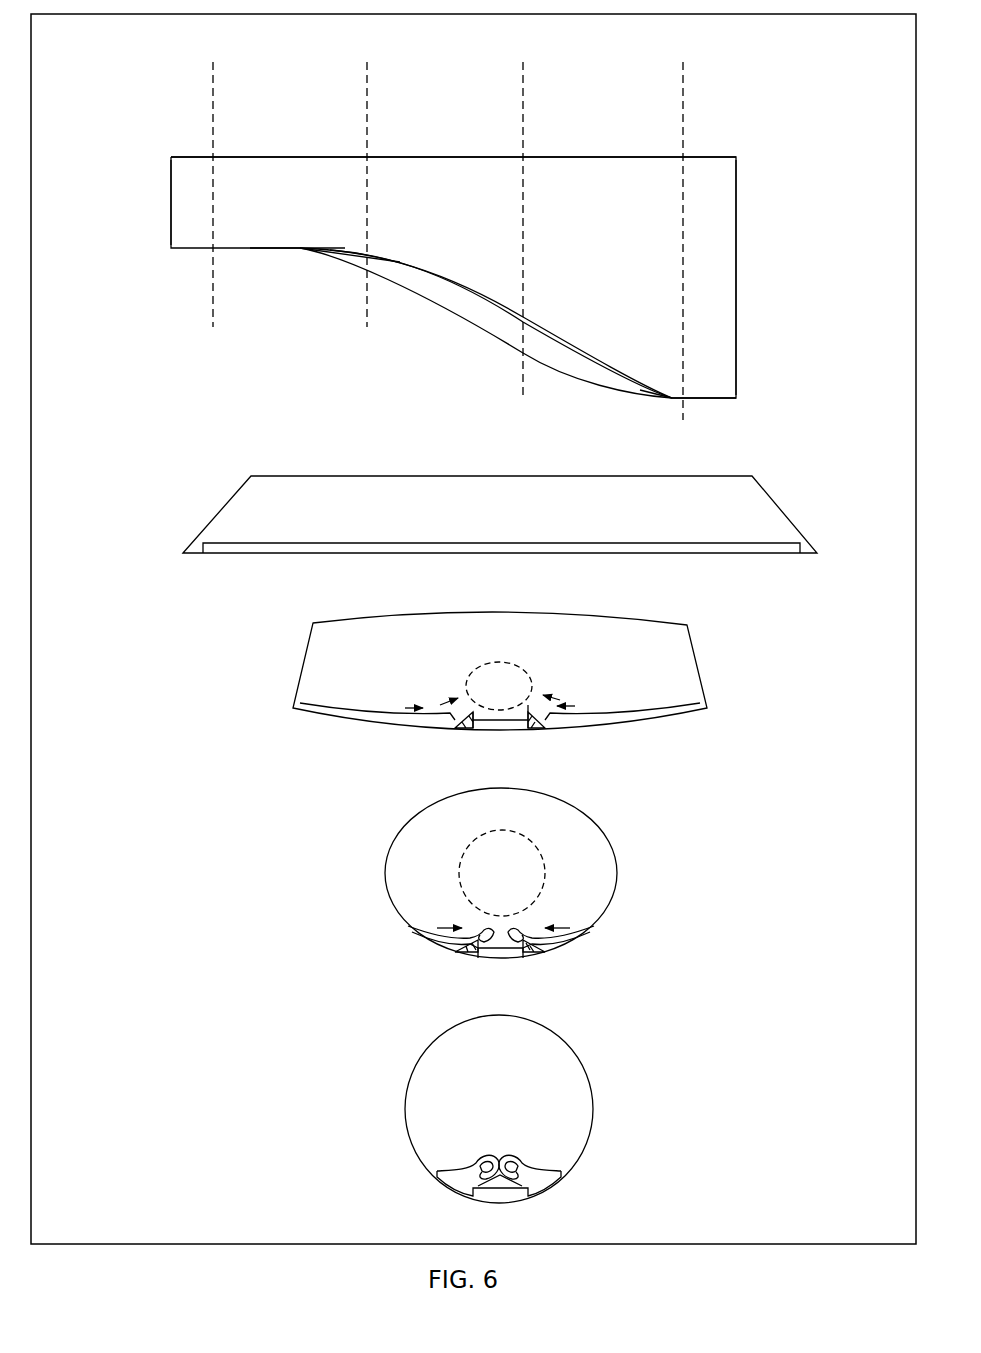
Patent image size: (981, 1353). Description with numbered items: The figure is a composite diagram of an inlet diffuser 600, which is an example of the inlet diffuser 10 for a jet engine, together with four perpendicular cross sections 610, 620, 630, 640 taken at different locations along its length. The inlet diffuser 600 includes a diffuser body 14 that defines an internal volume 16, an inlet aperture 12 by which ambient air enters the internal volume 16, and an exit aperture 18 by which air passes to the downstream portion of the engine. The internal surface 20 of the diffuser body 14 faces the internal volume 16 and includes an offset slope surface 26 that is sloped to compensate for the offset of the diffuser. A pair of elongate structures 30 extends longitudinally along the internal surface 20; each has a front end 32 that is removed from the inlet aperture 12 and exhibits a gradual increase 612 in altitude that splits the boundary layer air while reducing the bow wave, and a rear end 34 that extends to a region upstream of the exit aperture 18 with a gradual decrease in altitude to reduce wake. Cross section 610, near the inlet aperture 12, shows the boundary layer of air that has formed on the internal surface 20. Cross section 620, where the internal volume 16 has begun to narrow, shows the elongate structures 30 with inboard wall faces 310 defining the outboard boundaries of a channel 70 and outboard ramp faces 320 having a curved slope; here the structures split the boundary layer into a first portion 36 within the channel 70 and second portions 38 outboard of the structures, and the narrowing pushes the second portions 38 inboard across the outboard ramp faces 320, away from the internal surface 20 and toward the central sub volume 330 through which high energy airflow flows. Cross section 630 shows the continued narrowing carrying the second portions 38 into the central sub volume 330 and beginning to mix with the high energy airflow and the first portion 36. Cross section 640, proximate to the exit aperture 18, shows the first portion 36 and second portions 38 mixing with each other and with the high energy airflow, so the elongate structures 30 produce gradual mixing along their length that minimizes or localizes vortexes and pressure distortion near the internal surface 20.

The inlet diffuser 10 is at (177, 140).
The inlet aperture 12 is at (171, 212).
The diffuser body 14 is at (595, 177).
The internal volume 16 is at (453, 183).
The exit aperture 18 is at (736, 233).
The internal surface 20 is at (460, 322).
The offset slope surface 26 is at (708, 398).
The elongate structures 30 is at (563, 343).
The front end 32 is at (345, 248).
The rear end 34 is at (627, 378).
The first portion of boundary layer air 36 is at (500, 718).
The second portions of boundary layer air 38 is at (376, 705).
The channel 70 is at (528, 705).
The inboard wall faces 310 is at (467, 700).
The outboard ramp faces 320 is at (572, 710).
The central sub volume 330 is at (492, 678).
The inlet diffuser 600 is at (414, 548).
The cross section 610 is at (213, 70).
The gradual increase in altitude 612 is at (382, 255).
The cross section 620 is at (367, 70).
The cross section 630 is at (523, 70).
The cross section 640 is at (683, 70).